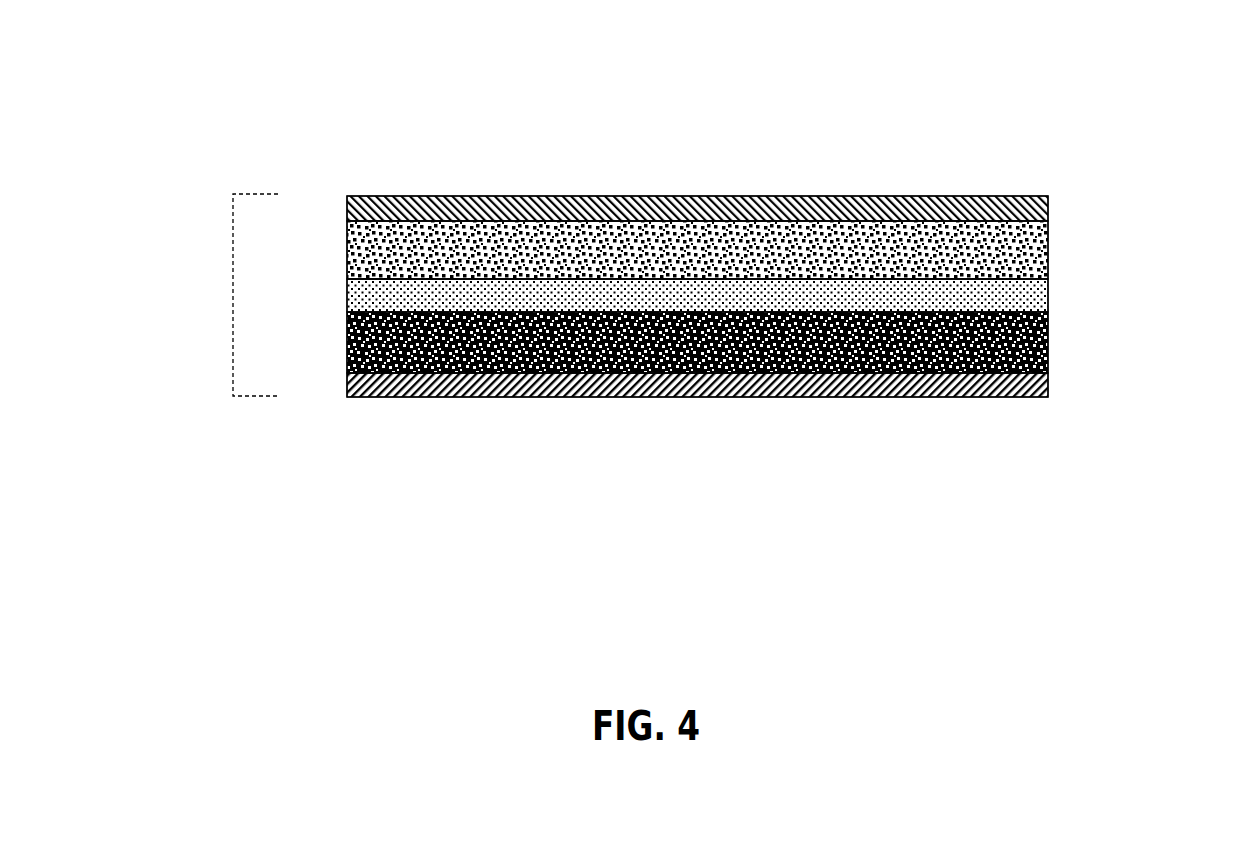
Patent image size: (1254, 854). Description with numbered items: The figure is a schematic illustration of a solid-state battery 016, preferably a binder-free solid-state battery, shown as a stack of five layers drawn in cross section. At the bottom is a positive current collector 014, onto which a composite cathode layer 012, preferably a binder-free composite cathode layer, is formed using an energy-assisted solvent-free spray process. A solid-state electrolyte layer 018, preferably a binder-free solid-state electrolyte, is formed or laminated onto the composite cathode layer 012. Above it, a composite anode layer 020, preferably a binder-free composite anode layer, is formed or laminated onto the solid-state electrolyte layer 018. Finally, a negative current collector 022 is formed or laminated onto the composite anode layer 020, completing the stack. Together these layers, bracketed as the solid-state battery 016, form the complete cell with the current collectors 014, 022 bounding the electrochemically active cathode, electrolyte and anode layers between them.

The composite cathode layer 012 is at (1060, 354).
The positive current collector 014 is at (692, 418).
The solid-state battery 016 is at (233, 295).
The solid-state electrolyte layer 018 is at (1062, 297).
The composite anode layer 020 is at (1058, 247).
The negative current collector 022 is at (692, 182).